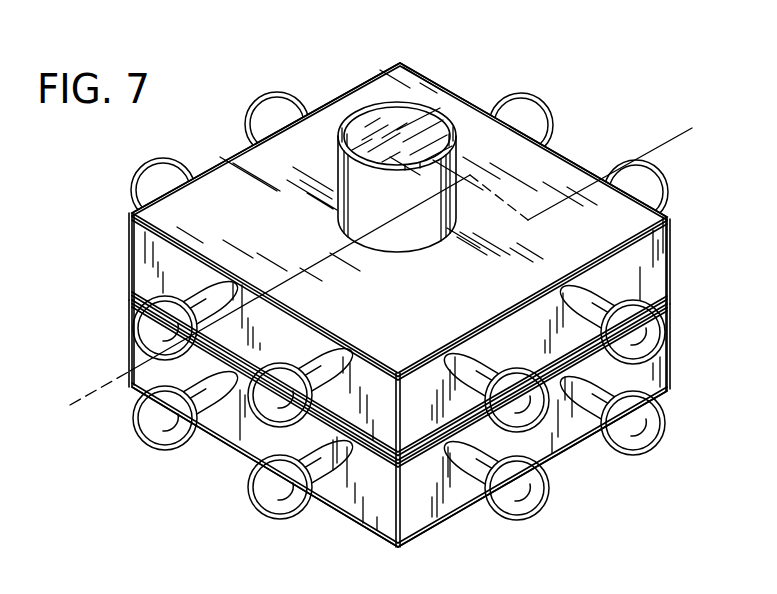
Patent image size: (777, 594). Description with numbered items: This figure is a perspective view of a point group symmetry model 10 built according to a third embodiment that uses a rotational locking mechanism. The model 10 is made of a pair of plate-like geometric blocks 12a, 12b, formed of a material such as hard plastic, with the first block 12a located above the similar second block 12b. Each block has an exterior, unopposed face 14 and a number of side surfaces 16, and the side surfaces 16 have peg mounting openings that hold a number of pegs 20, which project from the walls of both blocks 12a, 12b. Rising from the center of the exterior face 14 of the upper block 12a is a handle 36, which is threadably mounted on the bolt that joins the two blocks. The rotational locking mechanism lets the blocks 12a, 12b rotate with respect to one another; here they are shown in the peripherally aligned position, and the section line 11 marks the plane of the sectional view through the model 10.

The model 10 is at (580, 70).
The section line 11 is at (725, 163).
The first plate-like geometric block 12a is at (129, 270).
The second plate-like geometric block 12b is at (133, 339).
The exterior face 14 is at (223, 182).
The side surface 16 is at (140, 247).
The peg 20 is at (167, 437).
The handle 36 is at (387, 127).